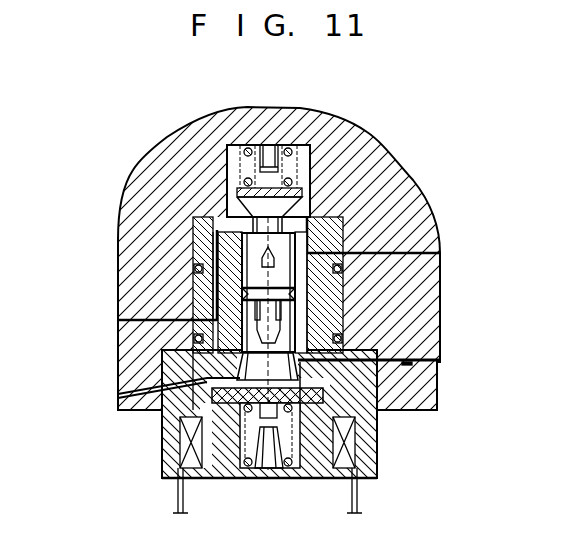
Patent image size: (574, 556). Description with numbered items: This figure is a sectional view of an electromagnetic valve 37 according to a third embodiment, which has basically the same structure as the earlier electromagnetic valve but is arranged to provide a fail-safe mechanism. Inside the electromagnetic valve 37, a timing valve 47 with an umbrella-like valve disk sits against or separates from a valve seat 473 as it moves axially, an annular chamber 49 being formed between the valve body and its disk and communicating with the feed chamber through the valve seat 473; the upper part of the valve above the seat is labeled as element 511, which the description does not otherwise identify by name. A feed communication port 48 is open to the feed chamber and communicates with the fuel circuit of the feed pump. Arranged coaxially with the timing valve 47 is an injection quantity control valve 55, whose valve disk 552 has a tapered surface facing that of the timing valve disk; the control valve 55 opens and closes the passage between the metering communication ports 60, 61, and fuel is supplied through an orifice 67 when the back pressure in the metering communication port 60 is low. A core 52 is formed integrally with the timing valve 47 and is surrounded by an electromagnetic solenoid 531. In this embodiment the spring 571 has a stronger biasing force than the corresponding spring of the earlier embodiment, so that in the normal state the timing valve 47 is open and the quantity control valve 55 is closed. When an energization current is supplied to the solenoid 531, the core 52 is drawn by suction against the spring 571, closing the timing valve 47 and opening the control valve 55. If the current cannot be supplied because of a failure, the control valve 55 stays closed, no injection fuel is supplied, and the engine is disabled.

The electromagnetic valve 37 is at (370, 130).
The cap chamber 511 is at (297, 145).
The valve seat 473 is at (243, 210).
The timing valve 47 is at (247, 255).
The feed communication port 48 is at (413, 252).
The annular chamber 49 is at (118, 320).
The injection quantity control valve 55 is at (283, 320).
The orifice 67 is at (440, 358).
The metering communication port 60 is at (392, 365).
The metering communication port 61 is at (133, 390).
The electromagnetic solenoid 531 is at (183, 445).
The core 52 is at (347, 448).
The spring 571 is at (247, 450).
The valve disk 552 is at (290, 412).